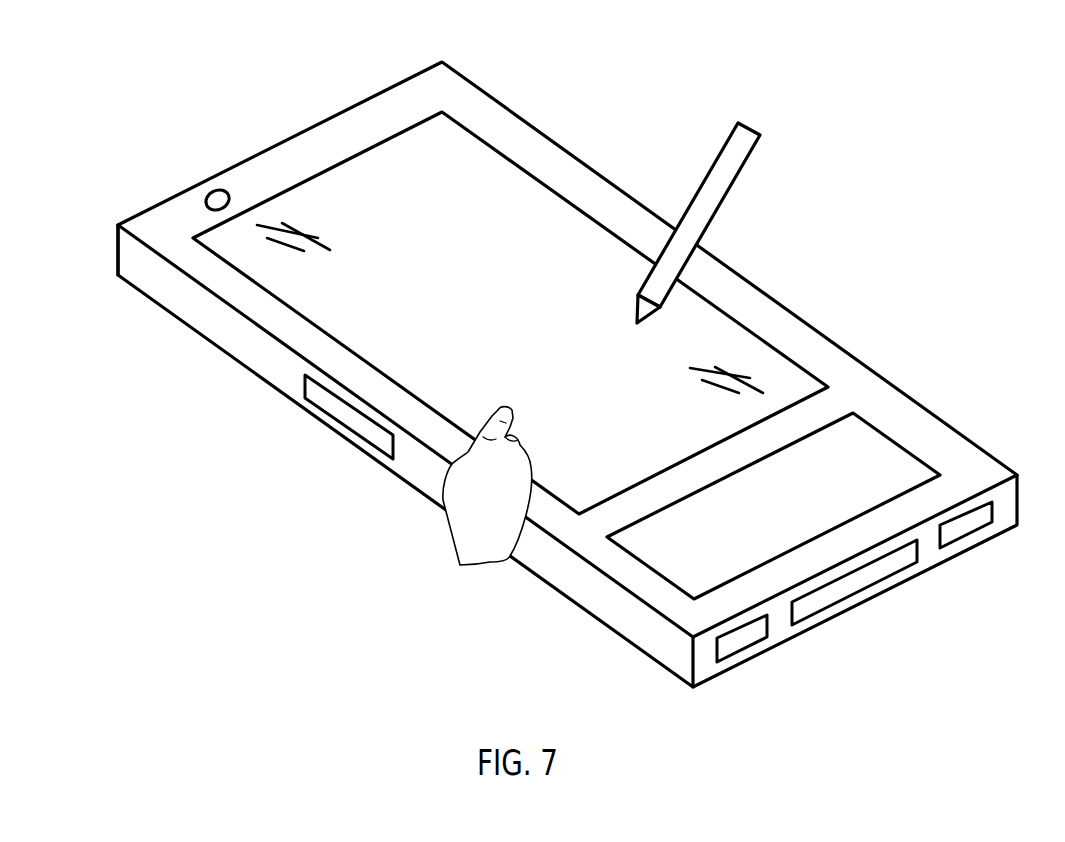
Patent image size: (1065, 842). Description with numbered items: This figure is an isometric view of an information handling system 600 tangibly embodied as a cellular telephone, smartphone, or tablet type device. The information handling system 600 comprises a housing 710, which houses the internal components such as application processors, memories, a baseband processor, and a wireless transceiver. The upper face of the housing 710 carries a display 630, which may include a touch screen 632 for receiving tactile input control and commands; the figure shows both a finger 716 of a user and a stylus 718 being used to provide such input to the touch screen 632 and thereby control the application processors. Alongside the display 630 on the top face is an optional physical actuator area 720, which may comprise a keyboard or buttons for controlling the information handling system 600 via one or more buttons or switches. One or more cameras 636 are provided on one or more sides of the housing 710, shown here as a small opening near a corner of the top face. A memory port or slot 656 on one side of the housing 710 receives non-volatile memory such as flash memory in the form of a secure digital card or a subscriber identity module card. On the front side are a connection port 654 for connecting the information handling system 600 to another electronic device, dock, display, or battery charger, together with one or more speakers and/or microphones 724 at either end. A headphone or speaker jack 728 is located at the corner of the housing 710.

The information handling system 600 is at (585, 88).
The display 630 is at (443, 178).
The touch screen 632 is at (540, 312).
The camera 636 is at (212, 190).
The connection port 654 is at (870, 587).
The memory port or slot 656 is at (313, 413).
The housing 710 is at (382, 92).
The finger 716 is at (499, 408).
The stylus 718 is at (720, 153).
The physical actuator area 720 is at (867, 462).
The speakers and/or microphones 724 is at (970, 537).
The headphone or speaker jack 728 is at (142, 211).